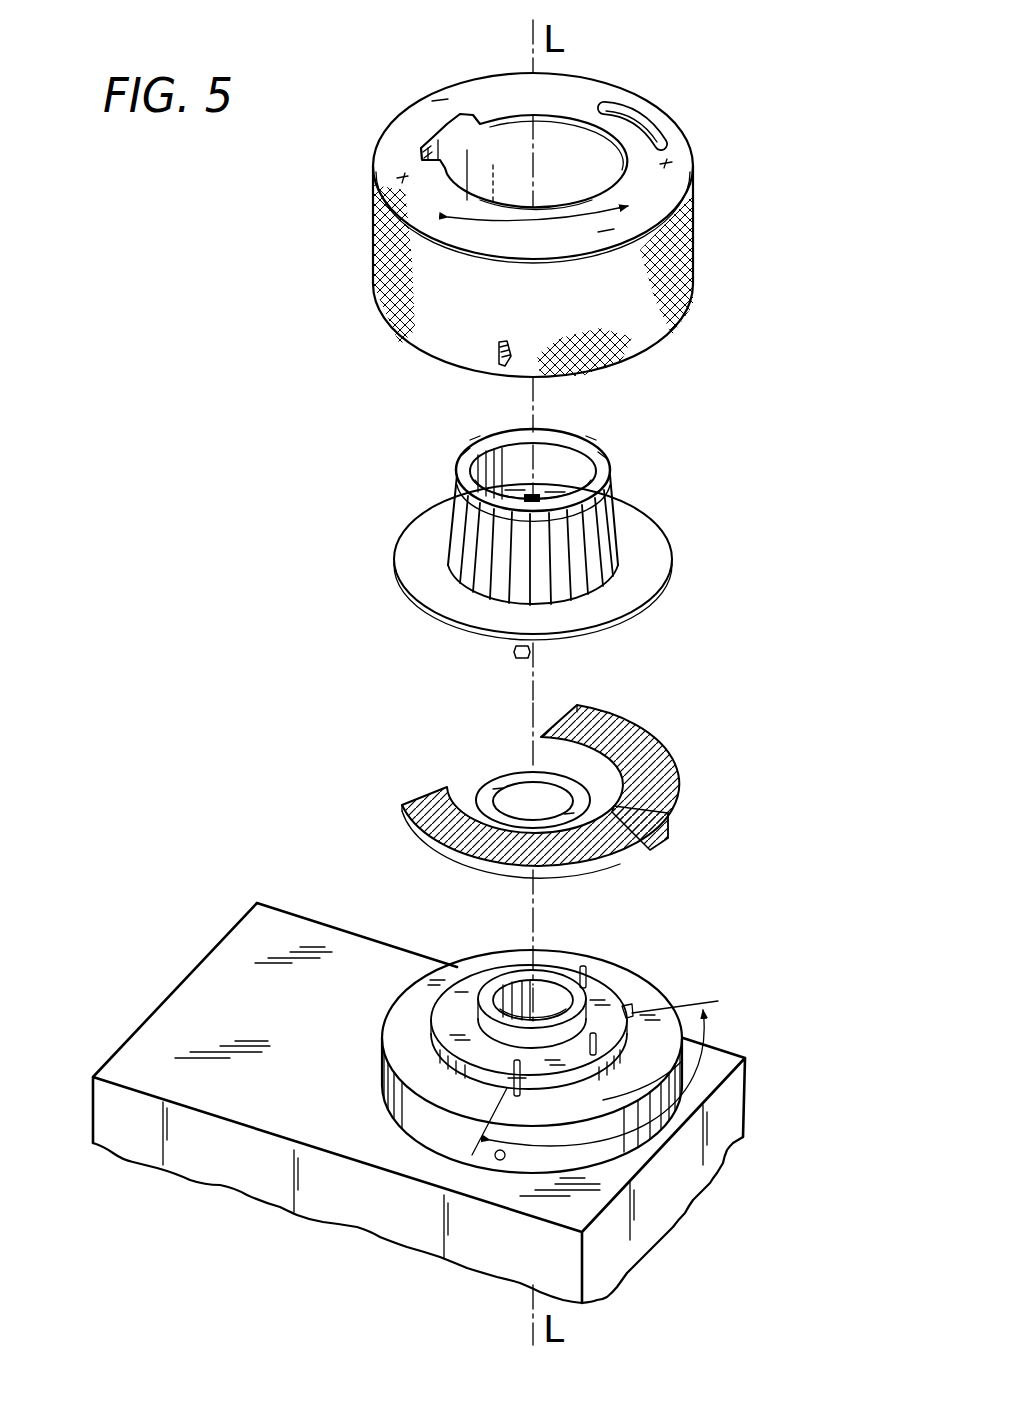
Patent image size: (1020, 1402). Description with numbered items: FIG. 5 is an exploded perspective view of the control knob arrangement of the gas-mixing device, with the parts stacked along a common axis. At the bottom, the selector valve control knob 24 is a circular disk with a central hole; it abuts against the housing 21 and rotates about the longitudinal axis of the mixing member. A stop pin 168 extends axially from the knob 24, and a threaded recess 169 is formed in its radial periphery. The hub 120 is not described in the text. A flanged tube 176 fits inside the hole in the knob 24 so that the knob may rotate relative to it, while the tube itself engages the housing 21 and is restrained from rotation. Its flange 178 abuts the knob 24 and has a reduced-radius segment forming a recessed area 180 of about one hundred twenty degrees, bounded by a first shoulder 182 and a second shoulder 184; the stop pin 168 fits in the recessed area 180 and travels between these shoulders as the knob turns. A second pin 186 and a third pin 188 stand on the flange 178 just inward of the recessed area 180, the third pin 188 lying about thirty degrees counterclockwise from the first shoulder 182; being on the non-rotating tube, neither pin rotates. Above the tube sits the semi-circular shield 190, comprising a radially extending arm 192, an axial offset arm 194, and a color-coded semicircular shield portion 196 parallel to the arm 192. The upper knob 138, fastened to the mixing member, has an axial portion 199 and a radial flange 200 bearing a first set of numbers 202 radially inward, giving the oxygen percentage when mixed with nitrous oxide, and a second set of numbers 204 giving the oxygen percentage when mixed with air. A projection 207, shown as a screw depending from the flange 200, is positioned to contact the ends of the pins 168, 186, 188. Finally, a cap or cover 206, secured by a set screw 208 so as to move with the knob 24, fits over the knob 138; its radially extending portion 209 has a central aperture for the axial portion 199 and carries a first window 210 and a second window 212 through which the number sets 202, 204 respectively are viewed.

The housing 21 is at (250, 932).
The selector valve control knob 24 is at (405, 968).
The hub 120 is at (402, 1108).
The knob 138 is at (559, 536).
The stop pin 168 is at (522, 1083).
The threaded recess 169 is at (500, 1162).
The flanged tube 176 is at (589, 1028).
The flange 178 is at (483, 975).
The recessed area 180 is at (718, 1050).
The first shoulder 182 is at (632, 1006).
The second shoulder 184 is at (505, 1097).
The second pin 186 is at (617, 1047).
The third pin 188 is at (585, 963).
The semi-circular shield 190 is at (568, 805).
The radially extending arm 192 is at (651, 850).
The axial offset arm 194 is at (665, 830).
The semicircular shield portion 196 is at (655, 750).
The axial portion 199 is at (572, 440).
The radial flange 200 is at (405, 530).
The first set of numbers 202 is at (647, 523).
The second set of numbers 204 is at (662, 566).
The cap or cover 206 is at (712, 138).
The projection 207 is at (514, 654).
The set screw 208 is at (500, 368).
The radially extending portion 209 is at (396, 152).
The first window 210 is at (458, 110).
The second window 212 is at (610, 100).